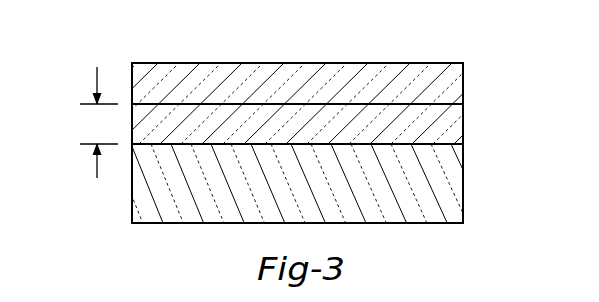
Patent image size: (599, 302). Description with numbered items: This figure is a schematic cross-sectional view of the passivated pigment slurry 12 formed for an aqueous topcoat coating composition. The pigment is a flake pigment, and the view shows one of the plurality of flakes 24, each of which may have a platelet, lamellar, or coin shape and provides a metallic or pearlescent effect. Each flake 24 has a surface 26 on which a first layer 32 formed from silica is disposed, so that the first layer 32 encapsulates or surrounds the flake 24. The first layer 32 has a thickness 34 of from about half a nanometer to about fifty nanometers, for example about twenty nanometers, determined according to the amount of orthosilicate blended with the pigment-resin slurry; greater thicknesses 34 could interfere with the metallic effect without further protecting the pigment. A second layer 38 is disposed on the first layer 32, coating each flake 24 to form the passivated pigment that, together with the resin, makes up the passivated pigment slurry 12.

The passivated pigment slurry 12 is at (110, 34).
The second layer 38 is at (463, 85).
The first layer 32 is at (463, 123).
The surface 26 is at (252, 146).
The flakes 24 is at (463, 180).
The thickness 34 is at (99, 122).